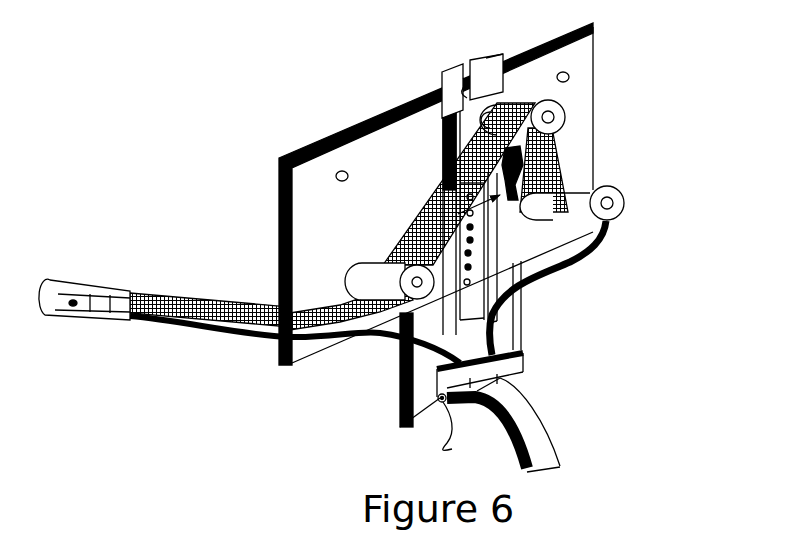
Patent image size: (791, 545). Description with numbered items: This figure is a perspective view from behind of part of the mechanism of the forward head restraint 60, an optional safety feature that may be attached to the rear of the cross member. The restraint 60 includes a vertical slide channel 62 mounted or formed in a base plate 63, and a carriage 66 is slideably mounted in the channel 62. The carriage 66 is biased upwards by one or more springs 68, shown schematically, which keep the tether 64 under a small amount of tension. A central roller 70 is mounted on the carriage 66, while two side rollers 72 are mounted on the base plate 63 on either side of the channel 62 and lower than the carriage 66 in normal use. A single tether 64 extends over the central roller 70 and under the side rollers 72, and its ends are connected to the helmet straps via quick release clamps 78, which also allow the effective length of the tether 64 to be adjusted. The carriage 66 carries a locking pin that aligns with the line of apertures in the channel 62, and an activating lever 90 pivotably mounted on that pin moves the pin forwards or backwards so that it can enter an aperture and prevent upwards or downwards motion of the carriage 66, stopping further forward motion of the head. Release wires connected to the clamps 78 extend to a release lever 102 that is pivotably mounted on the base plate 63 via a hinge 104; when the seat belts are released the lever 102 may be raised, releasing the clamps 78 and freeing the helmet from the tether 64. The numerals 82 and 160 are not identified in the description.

The forward head restraint 60 is at (654, 66).
The vertical slide channel 62 is at (468, 72).
The base plate 63 is at (381, 147).
The tether 64 is at (428, 190).
The carriage 66 is at (516, 98).
The springs 68 is at (508, 62).
The central roller 70 is at (566, 129).
The side rollers 72 is at (623, 213).
The quick release clamps 78 is at (90, 274).
The slotted rail 82 is at (476, 249).
The activating lever 90 is at (398, 238).
The release lever 102 is at (528, 409).
The hinge 104 is at (443, 443).
The cable 160 is at (191, 332).